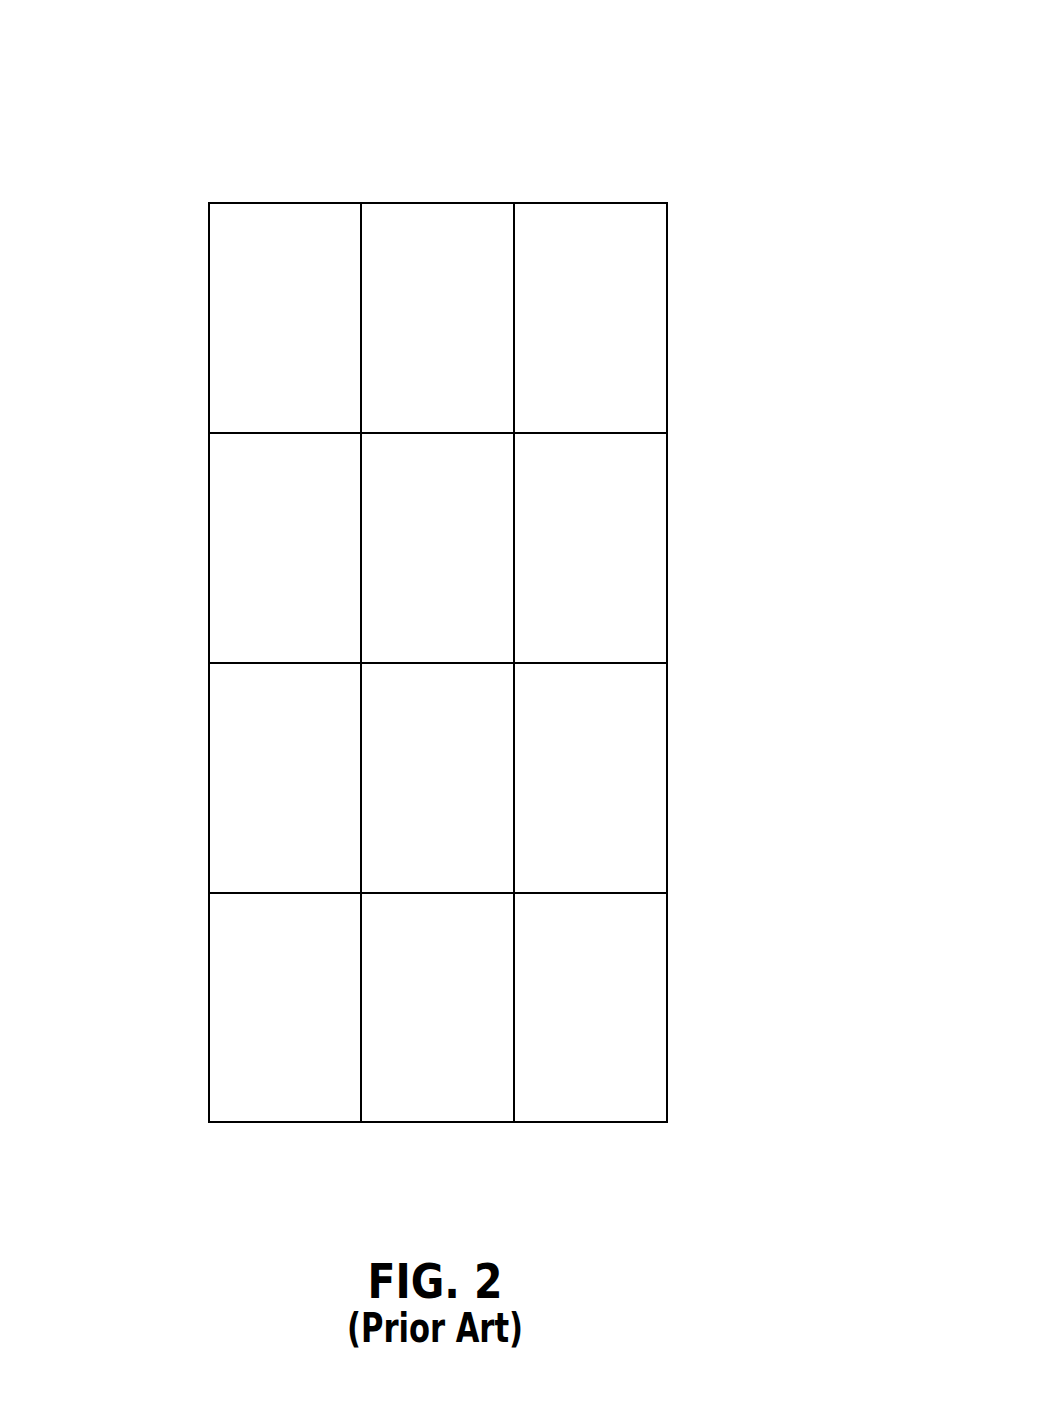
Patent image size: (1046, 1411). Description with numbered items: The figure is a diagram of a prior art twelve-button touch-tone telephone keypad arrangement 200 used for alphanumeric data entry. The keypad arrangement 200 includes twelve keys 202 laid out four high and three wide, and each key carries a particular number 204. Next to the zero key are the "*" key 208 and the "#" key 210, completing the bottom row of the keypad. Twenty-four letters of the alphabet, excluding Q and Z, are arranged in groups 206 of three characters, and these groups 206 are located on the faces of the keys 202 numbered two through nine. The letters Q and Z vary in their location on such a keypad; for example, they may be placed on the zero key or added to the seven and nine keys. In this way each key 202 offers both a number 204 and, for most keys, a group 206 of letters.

The twelve-button touch-tone telephone keypad arrangement 200 is at (708, 98).
The keys 202 is at (581, 218).
The number 204 is at (622, 526).
The groups of three characters 206 is at (650, 825).
The "*" key 208 is at (243, 979).
The "#" key 210 is at (625, 994).